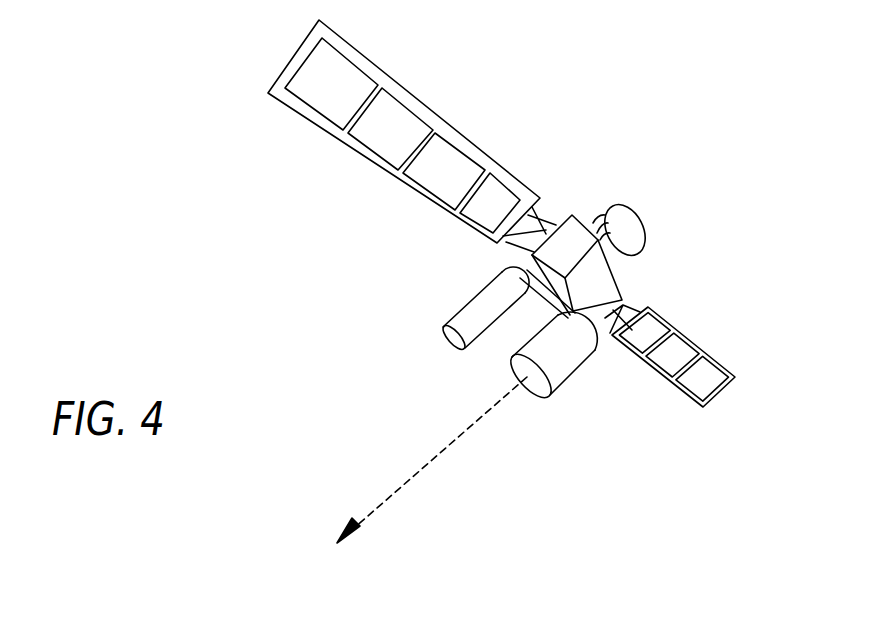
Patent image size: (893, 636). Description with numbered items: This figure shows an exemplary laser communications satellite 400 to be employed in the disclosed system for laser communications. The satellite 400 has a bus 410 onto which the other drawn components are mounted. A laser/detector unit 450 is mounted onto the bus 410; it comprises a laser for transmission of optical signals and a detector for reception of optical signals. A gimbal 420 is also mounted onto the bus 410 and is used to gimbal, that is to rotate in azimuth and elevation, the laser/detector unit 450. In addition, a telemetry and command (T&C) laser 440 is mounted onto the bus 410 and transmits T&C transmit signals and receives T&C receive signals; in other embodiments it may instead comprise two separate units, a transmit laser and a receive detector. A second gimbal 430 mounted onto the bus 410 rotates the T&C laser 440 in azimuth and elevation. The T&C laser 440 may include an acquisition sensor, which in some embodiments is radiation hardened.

The laser communications satellite 400 is at (267, 302).
The bus 410 is at (618, 290).
The gimbal 420 is at (593, 327).
The gimbal 430 is at (515, 270).
The telemetry and command (T&C) laser 440 is at (470, 303).
The laser/detector unit 450 is at (577, 366).